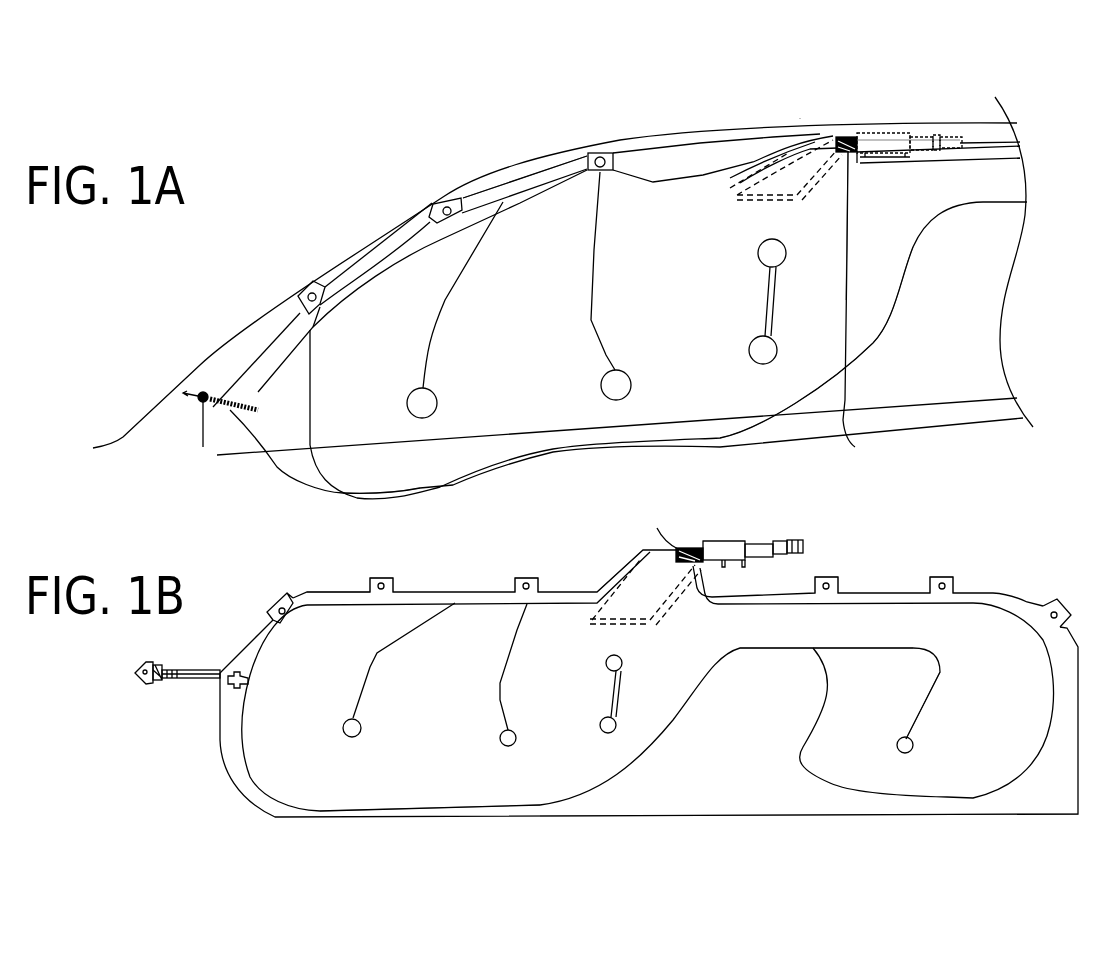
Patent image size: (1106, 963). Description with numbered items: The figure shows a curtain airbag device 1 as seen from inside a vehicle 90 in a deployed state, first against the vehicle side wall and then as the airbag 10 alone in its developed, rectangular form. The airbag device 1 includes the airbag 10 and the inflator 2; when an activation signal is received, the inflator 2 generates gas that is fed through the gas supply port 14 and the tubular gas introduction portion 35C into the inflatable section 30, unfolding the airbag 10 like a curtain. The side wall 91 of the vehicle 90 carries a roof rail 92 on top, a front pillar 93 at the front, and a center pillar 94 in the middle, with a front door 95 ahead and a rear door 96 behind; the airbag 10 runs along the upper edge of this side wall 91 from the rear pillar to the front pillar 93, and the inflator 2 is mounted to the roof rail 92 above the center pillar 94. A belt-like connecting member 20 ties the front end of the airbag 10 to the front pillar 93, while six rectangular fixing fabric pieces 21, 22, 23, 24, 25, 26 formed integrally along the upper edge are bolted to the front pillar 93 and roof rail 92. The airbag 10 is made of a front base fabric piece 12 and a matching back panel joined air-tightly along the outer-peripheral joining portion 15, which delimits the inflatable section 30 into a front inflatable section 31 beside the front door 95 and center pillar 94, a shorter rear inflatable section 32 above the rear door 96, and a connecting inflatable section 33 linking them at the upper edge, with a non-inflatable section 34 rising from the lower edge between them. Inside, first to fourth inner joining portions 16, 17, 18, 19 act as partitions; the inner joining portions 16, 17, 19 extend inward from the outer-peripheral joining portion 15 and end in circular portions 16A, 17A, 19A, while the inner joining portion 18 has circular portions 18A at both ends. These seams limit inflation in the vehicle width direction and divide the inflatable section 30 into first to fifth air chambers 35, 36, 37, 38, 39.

In FIG. 1A, the airbag device 1 is at (893, 110).
In FIG. 1B, the airbag device 1 is at (699, 518).
In FIG. 1A, the inflator 2 is at (888, 131).
In FIG. 1B, the inflator 2 is at (736, 544).
In FIG. 1A, the airbag 10 is at (807, 110).
In FIG. 1B, the airbag 10 is at (783, 513).
In FIG. 1A, the front base fabric piece 12 is at (597, 410).
In FIG. 1B, the front base fabric piece 12 is at (437, 753).
In FIG. 1A, the gas supply port 14 is at (862, 167).
In FIG. 1B, the gas supply port 14 is at (660, 523).
In FIG. 1A, the outer-peripheral joining portion 15 is at (887, 318).
In FIG. 1A, the first inner joining portion 16 is at (430, 333).
In FIG. 1B, the first inner joining portion 16 is at (375, 657).
In FIG. 1A, the circular portion 16A is at (407, 405).
In FIG. 1B, the circular portion 16A is at (351, 740).
In FIG. 1A, the second inner joining portion 17 is at (593, 310).
In FIG. 1B, the second inner joining portion 17 is at (510, 647).
In FIG. 1A, the circular portion 17A is at (601, 385).
In FIG. 1B, the circular portion 17A is at (517, 747).
In FIG. 1A, the third inner joining portion 18 is at (767, 293).
In FIG. 1B, the third inner joining portion 18 is at (613, 697).
In FIG. 1A, the circular portions 18A is at (785, 260).
In FIG. 1B, the circular portions 18A is at (623, 663).
In FIG. 1B, the fourth inner joining portion 19 is at (938, 698).
In FIG. 1B, the circular portion 19A is at (914, 746).
In FIG. 1A, the connecting member 20 is at (203, 393).
In FIG. 1B, the connecting member 20 is at (167, 687).
In FIG. 1A, the fixing fabric piece 21 is at (311, 283).
In FIG. 1B, the fixing fabric piece 21 is at (272, 607).
In FIG. 1A, the fixing fabric piece 22 is at (443, 199).
In FIG. 1B, the fixing fabric piece 22 is at (378, 577).
In FIG. 1A, the fixing fabric piece 23 is at (600, 153).
In FIG. 1B, the fixing fabric piece 23 is at (525, 577).
In FIG. 1B, the fixing fabric piece 24 is at (826, 577).
In FIG. 1B, the fixing fabric piece 25 is at (941, 577).
In FIG. 1B, the fixing fabric piece 26 is at (1061, 612).
In FIG. 1A, the inflatable section 30 is at (817, 373).
In FIG. 1B, the inflatable section 30 is at (650, 740).
In FIG. 1A, the front inflatable section 31 is at (680, 410).
In FIG. 1B, the front inflatable section 31 is at (543, 795).
In FIG. 1B, the rear inflatable section 32 is at (993, 630).
In FIG. 1A, the connecting inflatable section 33 is at (990, 173).
In FIG. 1B, the connecting inflatable section 33 is at (770, 648).
In FIG. 1B, the non-inflatable section 34 is at (747, 797).
In FIG. 1A, the first air chamber 35 is at (367, 375).
In FIG. 1B, the first air chamber 35 is at (298, 736).
In FIG. 1A, the gas introduction portion 35C is at (778, 155).
In FIG. 1B, the gas introduction portion 35C is at (643, 588).
In FIG. 1A, the second air chamber 36 is at (497, 328).
In FIG. 1B, the second air chamber 36 is at (425, 710).
In FIG. 1A, the third air chamber 37 is at (657, 292).
In FIG. 1B, the third air chamber 37 is at (568, 660).
In FIG. 1B, the fourth air chamber 38 is at (1020, 723).
In FIG. 1B, the fifth air chamber 39 is at (870, 723).
In FIG. 1A, the vehicle 90 is at (518, 123).
In FIG. 1A, the side wall 91 is at (533, 220).
In FIG. 1A, the roof rail 92 is at (668, 150).
In FIG. 1A, the front pillar 93 is at (237, 323).
In FIG. 1A, the center pillar 94 is at (824, 208).
In FIG. 1A, the front door 95 is at (445, 470).
In FIG. 1A, the rear door 96 is at (933, 420).